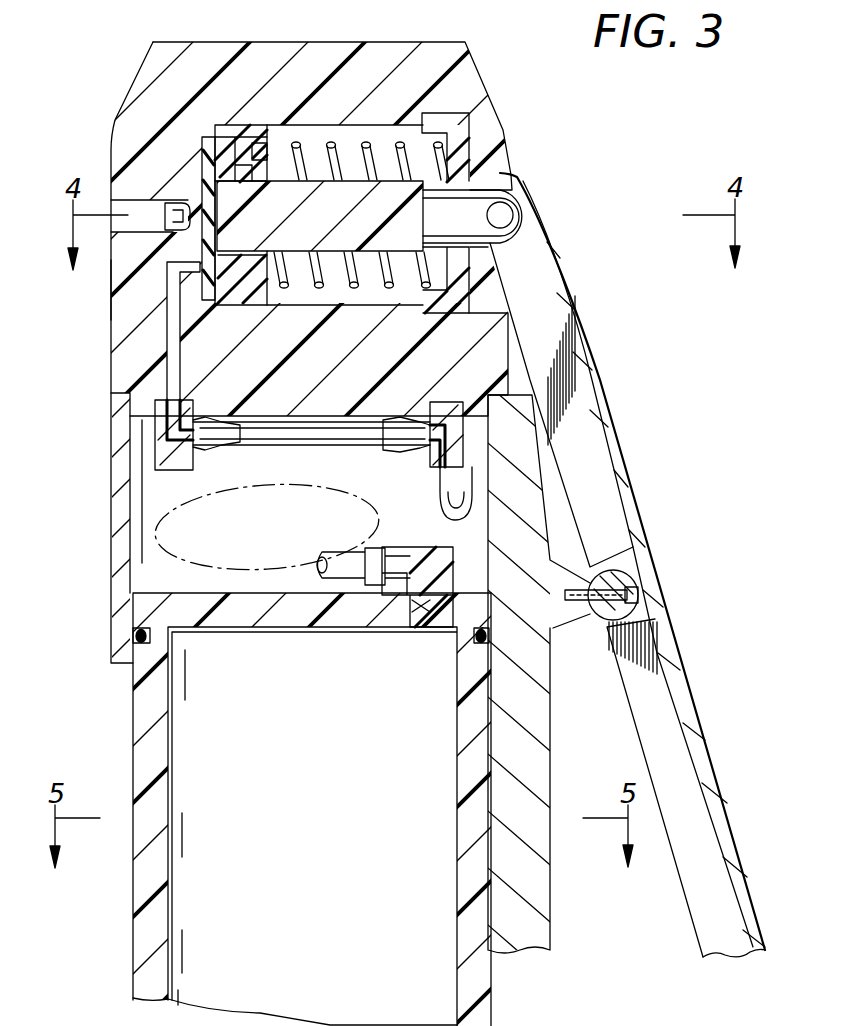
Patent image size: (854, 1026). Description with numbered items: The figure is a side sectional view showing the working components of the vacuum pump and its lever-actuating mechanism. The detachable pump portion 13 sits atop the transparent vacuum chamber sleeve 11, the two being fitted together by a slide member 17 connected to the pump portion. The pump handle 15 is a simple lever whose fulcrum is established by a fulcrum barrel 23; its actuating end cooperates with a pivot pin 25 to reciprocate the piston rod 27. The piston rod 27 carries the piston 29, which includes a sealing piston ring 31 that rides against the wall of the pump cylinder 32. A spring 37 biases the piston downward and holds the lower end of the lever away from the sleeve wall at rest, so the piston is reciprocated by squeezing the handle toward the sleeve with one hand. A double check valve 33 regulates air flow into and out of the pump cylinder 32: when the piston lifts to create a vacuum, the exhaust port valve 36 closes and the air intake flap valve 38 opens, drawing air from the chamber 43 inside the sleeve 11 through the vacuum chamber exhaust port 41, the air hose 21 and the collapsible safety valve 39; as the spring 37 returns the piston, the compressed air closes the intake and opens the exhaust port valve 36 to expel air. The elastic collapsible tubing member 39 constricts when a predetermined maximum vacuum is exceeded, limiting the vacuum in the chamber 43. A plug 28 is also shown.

The vacuum chamber sleeve 11 is at (477, 973).
The pump portion 13 is at (466, 47).
The pump handle 15 is at (592, 388).
The slide member 17 is at (553, 920).
The air hose 21 is at (313, 570).
The fulcrum barrel 23 is at (627, 578).
The pivot pin 25 is at (500, 215).
The piston rod 27 is at (303, 221).
The plug 28 is at (400, 167).
The piston 29 is at (238, 135).
The sealing piston ring 31 is at (283, 125).
The pump cylinder 32 is at (353, 132).
The double check valve 33 is at (200, 200).
The exhaust port valve 36 is at (115, 232).
The spring 37 is at (172, 347).
The air intake flap valve 38 is at (140, 290).
The collapsible safety valve 39 is at (318, 432).
The vacuum chamber exhaust port 41 is at (423, 602).
The chamber 43 is at (257, 757).